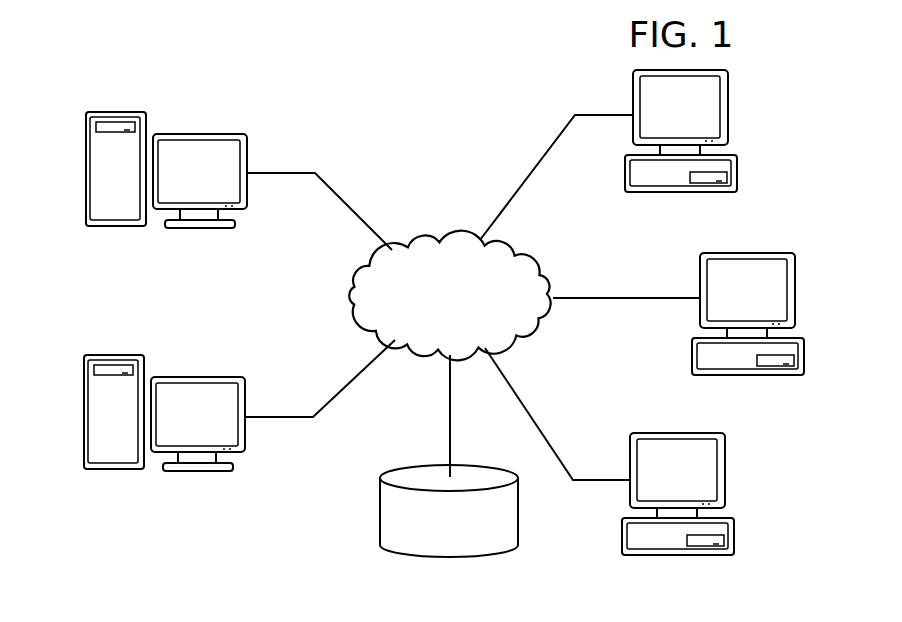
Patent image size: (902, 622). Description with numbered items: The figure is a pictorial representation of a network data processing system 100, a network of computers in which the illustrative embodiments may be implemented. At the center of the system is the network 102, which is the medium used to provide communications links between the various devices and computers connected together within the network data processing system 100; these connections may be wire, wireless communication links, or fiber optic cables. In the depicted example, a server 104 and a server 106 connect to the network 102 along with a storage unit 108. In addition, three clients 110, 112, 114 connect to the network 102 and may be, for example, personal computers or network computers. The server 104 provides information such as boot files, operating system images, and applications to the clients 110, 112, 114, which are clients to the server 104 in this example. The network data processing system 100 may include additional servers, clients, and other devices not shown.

The network data processing system 100 is at (320, 78).
The network 102 is at (445, 232).
The server 104 is at (86, 170).
The server 106 is at (84, 410).
The storage unit 108 is at (380, 509).
The client 110 is at (740, 170).
The client 112 is at (806, 355).
The client 114 is at (735, 537).